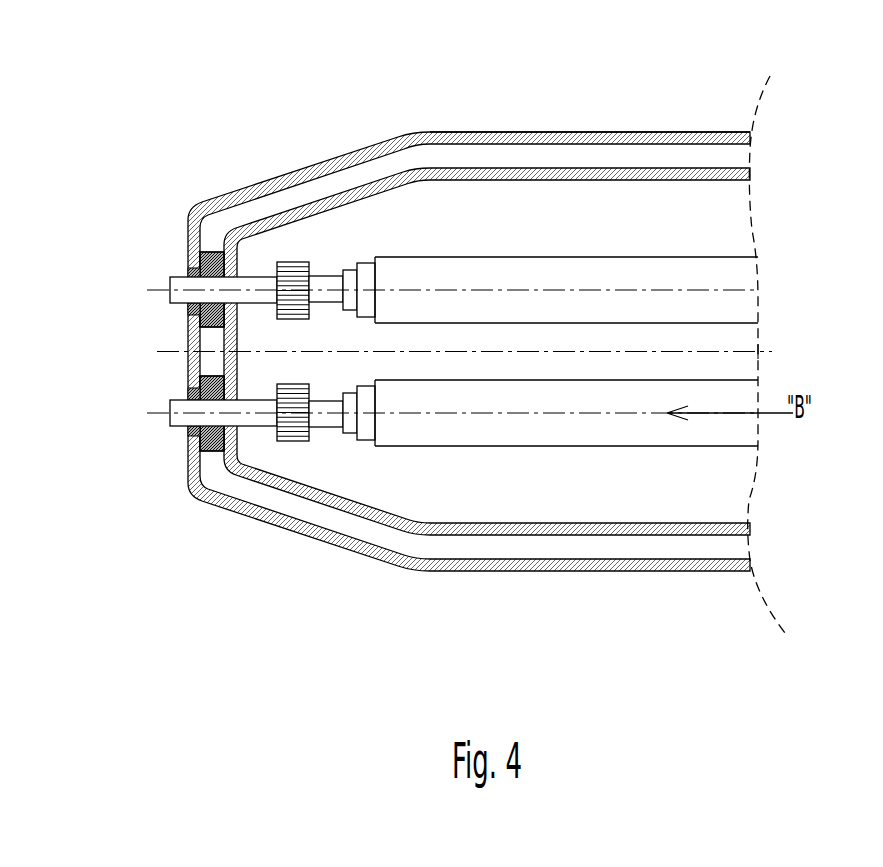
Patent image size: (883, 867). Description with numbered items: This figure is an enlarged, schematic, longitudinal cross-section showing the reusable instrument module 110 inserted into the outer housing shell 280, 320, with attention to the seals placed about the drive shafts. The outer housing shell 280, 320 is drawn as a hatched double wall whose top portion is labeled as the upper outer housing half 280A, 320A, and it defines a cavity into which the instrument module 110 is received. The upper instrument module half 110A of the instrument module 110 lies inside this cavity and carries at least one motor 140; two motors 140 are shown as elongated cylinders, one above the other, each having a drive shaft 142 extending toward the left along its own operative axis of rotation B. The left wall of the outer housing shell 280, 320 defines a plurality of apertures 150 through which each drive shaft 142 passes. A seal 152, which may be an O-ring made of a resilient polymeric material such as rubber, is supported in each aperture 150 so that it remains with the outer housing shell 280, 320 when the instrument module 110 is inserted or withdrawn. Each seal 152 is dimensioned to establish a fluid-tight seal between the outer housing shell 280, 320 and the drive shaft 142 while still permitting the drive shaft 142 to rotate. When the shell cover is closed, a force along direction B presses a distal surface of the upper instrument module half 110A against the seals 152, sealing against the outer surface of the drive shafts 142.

The instrument module 110 is at (480, 303).
The upper instrument module half 110A is at (440, 172).
The motor 140 is at (738, 272).
The drive shaft 142 is at (185, 287).
The aperture 150 is at (190, 315).
The seal 152 is at (212, 262).
The outer housing shell 280 is at (469, 303).
The outer housing shell 320 is at (567, 133).
The upper outer housing half 280A is at (601, 86).
The upper outer housing half 320A is at (688, 138).